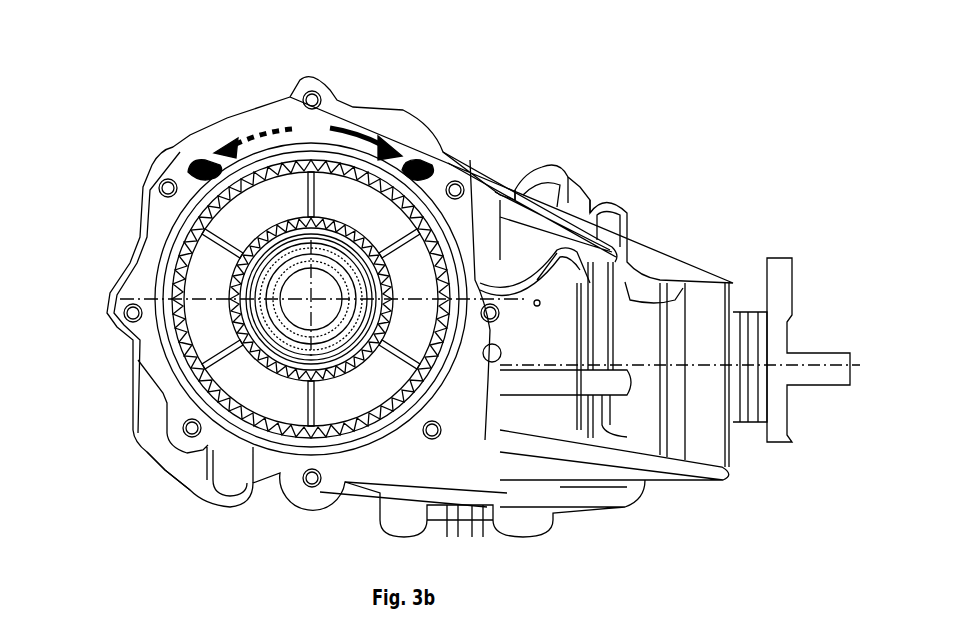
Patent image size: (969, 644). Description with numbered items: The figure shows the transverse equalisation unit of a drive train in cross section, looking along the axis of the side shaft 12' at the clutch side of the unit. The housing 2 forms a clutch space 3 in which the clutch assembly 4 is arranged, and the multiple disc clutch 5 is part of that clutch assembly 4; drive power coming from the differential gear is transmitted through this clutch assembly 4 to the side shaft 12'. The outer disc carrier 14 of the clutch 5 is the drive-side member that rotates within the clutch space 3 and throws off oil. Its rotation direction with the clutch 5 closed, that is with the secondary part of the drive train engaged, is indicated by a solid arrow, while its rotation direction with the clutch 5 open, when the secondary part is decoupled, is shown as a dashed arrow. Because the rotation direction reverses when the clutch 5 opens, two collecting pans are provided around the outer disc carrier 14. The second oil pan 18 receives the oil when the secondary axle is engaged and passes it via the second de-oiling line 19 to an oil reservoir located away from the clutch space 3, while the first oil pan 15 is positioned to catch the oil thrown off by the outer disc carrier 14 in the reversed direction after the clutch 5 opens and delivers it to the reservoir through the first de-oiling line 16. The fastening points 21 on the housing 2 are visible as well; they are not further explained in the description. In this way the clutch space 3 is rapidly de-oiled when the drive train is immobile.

The housing 2 is at (355, 112).
The clutch space 3 is at (195, 402).
The clutch assembly 4 is at (155, 475).
The multiple disc clutch 5 is at (311, 299).
The side shaft 12' is at (322, 299).
The outer disc carrier 14 is at (302, 172).
The first oil pan 15 is at (226, 160).
The first de-oiling line 16 is at (200, 165).
The second oil pan 18 is at (395, 160).
The second de-oiling line 19 is at (422, 165).
The fastening points 21 is at (537, 305).